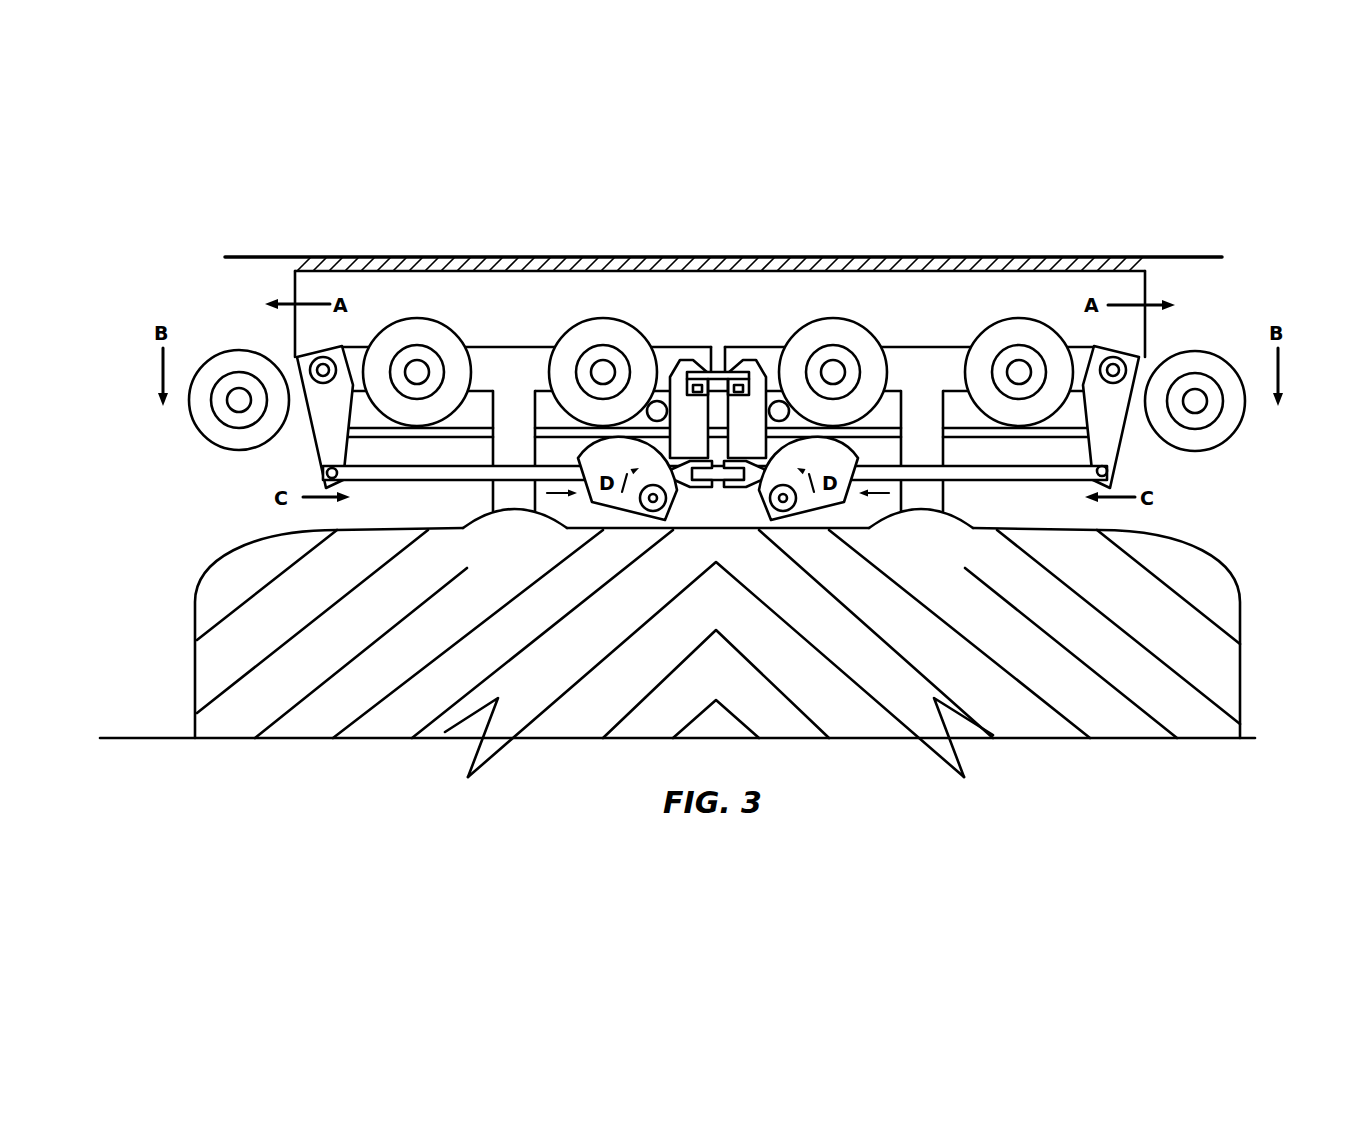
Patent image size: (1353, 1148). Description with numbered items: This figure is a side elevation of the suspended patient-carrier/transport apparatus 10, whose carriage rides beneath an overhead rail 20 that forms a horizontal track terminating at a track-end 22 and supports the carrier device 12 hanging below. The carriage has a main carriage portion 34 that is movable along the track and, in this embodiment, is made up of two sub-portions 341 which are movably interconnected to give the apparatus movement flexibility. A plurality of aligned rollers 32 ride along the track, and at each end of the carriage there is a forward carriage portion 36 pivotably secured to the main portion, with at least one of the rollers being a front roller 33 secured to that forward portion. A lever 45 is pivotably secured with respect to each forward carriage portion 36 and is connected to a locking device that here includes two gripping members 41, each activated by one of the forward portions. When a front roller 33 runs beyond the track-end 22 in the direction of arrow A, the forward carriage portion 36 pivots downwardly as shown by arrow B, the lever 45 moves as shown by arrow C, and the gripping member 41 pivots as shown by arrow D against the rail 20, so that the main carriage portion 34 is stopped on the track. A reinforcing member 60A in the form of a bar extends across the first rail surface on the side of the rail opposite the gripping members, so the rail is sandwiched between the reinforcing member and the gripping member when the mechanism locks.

The suspended patient-carrier/transport apparatus 10 is at (860, 193).
The carrier device 12 is at (313, 715).
The overhead rail 20 is at (508, 293).
The track-end 22 is at (298, 437).
The aligned rollers 32 is at (843, 333).
The front roller 33 is at (1193, 360).
The main carriage portion 34 is at (485, 360).
The main carriage sub-portions 341 is at (547, 350).
The forward carriage portion 36 is at (297, 368).
The gripping member 41 is at (900, 517).
The lever 45 is at (1010, 472).
The reinforcing member 60A is at (658, 402).